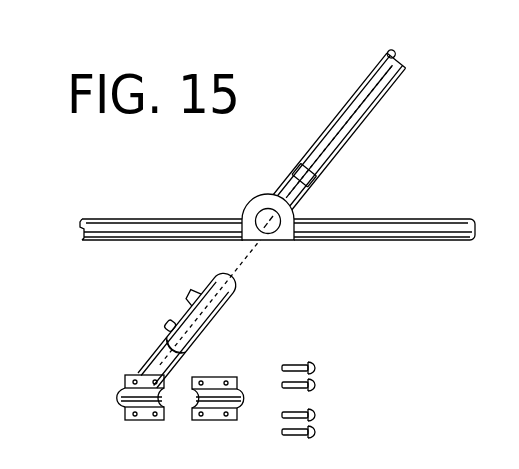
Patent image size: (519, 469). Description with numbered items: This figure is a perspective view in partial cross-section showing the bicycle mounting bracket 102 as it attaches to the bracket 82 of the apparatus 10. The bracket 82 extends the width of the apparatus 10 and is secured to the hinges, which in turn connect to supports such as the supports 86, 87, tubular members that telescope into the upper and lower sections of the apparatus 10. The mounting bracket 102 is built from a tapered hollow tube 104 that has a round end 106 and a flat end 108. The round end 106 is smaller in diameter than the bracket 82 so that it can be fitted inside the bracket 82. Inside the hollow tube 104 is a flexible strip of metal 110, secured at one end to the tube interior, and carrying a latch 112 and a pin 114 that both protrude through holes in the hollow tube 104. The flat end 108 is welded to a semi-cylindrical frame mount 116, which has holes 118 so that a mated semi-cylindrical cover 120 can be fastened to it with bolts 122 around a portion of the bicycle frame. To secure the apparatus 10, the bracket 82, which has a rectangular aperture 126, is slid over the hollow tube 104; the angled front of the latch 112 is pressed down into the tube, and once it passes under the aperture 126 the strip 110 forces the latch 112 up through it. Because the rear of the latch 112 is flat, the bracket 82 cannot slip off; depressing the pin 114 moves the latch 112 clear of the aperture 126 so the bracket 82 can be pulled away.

The apparatus 10 is at (305, 134).
The bracket 82 is at (355, 115).
The support 86 is at (393, 230).
The support 87 is at (171, 222).
The rectangular aperture 126 is at (305, 178).
The mounting bracket 102 is at (205, 302).
The tapered hollow tube 104 is at (221, 312).
The round end 106 is at (235, 278).
The flexible strip of metal 110 is at (188, 341).
The latch 112 is at (199, 287).
The pin 114 is at (173, 322).
The semi-cylindrical frame mount 116 is at (143, 405).
The flat end 108 is at (163, 378).
The holes 118 is at (119, 408).
The semi-cylindrical cover 120 is at (232, 424).
The bolts 122 is at (294, 361).